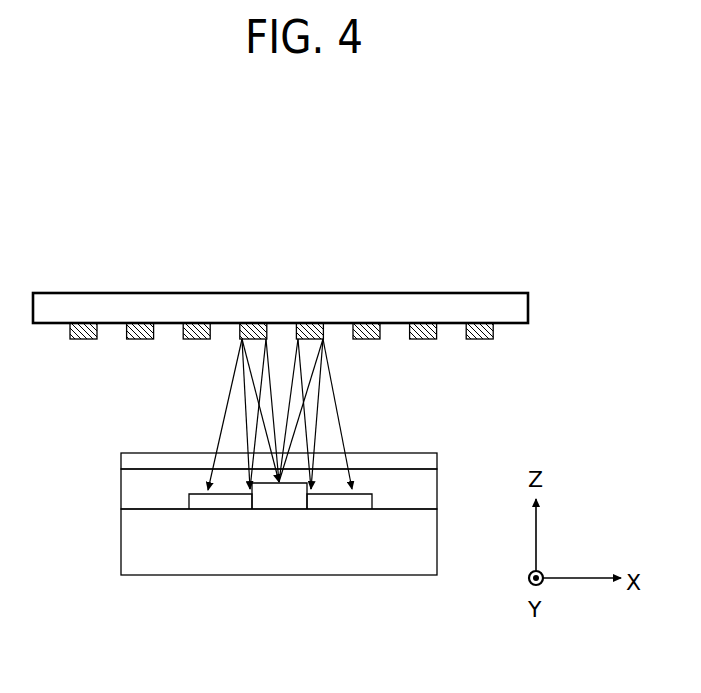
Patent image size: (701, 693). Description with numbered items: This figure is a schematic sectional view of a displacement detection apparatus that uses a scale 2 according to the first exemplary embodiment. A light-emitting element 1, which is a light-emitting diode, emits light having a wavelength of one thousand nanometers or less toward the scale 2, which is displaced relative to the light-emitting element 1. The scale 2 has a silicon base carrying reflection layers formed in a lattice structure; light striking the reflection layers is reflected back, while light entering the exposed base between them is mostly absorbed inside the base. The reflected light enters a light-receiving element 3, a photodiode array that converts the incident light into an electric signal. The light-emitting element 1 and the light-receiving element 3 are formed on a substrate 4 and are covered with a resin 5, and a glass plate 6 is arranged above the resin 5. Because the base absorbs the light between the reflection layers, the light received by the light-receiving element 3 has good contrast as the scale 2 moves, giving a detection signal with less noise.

The light-emitting element 1 is at (278, 497).
The scale 2 is at (543, 292).
The light-receiving element 3 is at (198, 498).
The substrate 4 is at (425, 548).
The resin 5 is at (425, 497).
The glass plate 6 is at (410, 462).